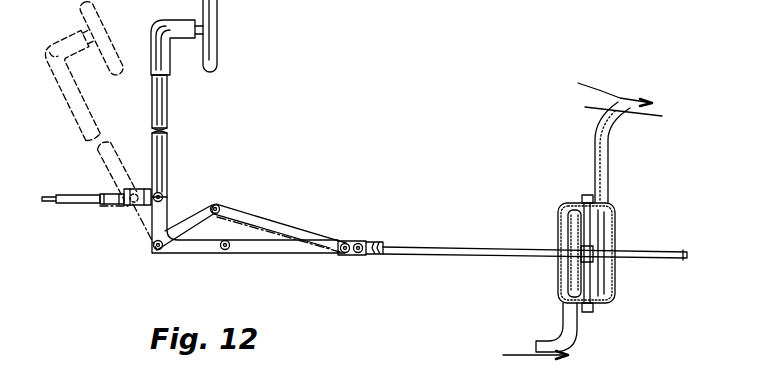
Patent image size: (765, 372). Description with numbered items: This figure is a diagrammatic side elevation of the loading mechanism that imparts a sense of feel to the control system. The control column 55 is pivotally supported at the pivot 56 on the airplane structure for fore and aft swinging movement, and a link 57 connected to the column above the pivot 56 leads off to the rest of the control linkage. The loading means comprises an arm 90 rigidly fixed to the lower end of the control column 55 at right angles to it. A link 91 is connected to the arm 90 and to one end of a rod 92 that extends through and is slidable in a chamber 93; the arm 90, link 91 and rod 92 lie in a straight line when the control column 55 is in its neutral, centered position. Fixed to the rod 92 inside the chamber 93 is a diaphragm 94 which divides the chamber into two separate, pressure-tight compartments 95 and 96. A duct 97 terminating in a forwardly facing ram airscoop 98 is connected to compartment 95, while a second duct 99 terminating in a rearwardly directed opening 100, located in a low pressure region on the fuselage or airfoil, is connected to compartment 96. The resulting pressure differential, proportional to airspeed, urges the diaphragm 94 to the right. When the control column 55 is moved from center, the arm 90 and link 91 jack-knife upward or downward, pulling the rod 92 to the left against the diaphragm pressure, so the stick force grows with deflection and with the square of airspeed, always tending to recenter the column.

The control column 55 is at (168, 118).
The pivot 56 is at (150, 248).
The link 57 is at (67, 204).
The arm 90 is at (198, 212).
The link 91 is at (272, 222).
The rod 92 is at (432, 248).
The chamber 93 is at (557, 227).
The diaphragm 94 is at (590, 232).
The compartment 95 is at (562, 287).
The compartment 96 is at (612, 287).
The duct 97 is at (573, 337).
The ram airscoop 98 is at (536, 345).
The second duct 99 is at (608, 170).
The rearwardly directed opening 100 is at (599, 93).